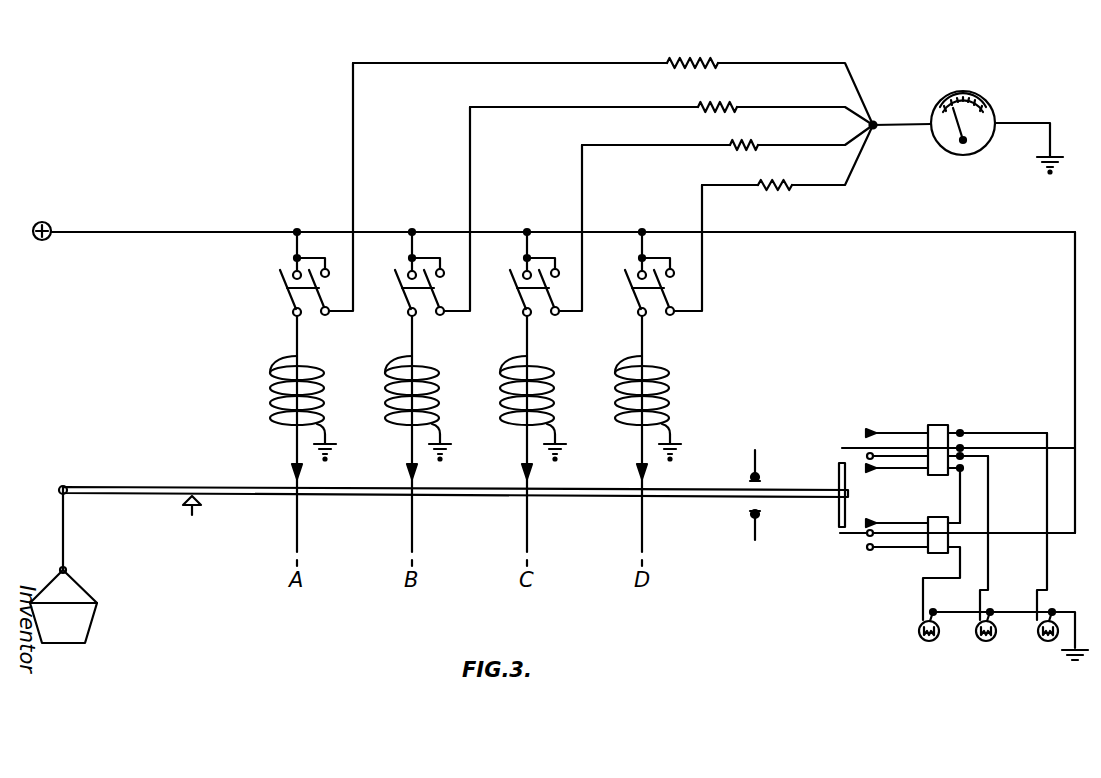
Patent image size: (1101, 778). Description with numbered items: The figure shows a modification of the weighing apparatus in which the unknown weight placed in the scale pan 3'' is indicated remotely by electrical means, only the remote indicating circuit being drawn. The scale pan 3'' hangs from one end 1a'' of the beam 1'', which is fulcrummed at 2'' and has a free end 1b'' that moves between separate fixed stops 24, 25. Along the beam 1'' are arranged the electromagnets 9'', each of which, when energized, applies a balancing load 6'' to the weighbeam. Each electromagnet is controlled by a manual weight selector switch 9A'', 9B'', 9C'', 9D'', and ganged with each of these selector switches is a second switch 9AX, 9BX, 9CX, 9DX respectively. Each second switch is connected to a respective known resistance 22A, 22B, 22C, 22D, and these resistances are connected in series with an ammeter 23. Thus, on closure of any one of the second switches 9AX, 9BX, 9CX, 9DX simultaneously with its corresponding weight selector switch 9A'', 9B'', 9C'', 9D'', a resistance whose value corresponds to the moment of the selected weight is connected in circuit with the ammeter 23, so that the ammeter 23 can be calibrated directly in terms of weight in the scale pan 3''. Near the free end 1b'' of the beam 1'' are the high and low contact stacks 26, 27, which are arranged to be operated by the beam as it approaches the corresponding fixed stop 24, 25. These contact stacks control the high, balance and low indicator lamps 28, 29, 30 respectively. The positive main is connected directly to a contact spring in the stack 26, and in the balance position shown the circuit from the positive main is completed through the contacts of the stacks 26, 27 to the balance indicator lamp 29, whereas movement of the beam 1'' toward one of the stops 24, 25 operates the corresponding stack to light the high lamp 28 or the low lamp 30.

The beam 1'' is at (455, 473).
The beam end 1a'' is at (72, 470).
The free end of the beam 1b'' is at (825, 496).
The fulcrum 2'' is at (199, 517).
The scale pan 3'' is at (79, 568).
The balancing load 6'' is at (455, 470).
The electromagnets 9'' is at (461, 408).
The manual weight selector switch 9A'' is at (280, 293).
The second switch 9AX is at (319, 313).
The manual weight selector switch 9B'' is at (395, 293).
The second switch 9BX is at (434, 313).
The manual weight selector switch 9C'' is at (510, 293).
The second switch 9CX is at (549, 313).
The manual weight selector switch 9D'' is at (625, 293).
The second switch 9DX is at (664, 313).
The resistance 22A is at (698, 62).
The resistance 22B is at (745, 104).
The resistance 22C is at (760, 142).
The resistance 22D is at (784, 182).
The ammeter 23 is at (968, 97).
The fixed stop 24 is at (759, 518).
The fixed stop 25 is at (756, 468).
The high contact stack 26 is at (906, 560).
The low contact stack 27 is at (908, 432).
The high indicator lamp 28 is at (927, 642).
The balance indicator lamp 29 is at (984, 642).
The low indicator lamp 30 is at (1046, 642).